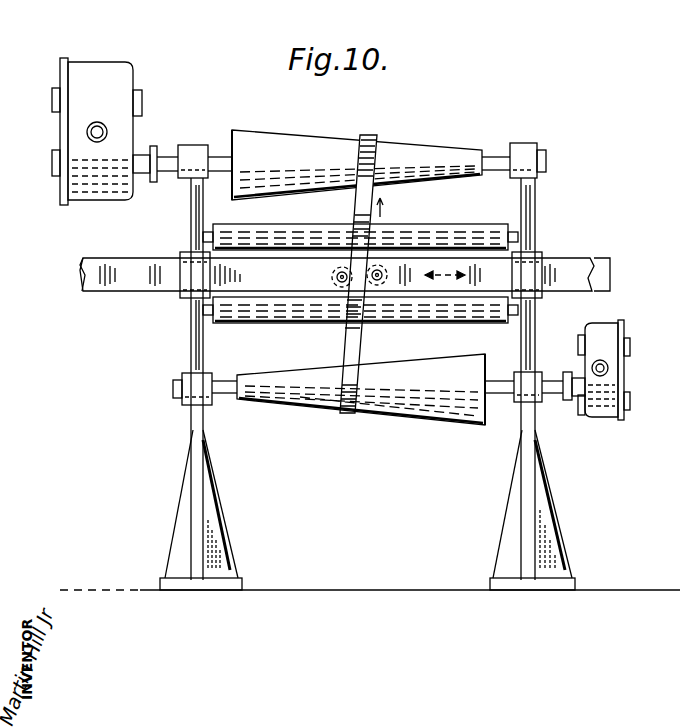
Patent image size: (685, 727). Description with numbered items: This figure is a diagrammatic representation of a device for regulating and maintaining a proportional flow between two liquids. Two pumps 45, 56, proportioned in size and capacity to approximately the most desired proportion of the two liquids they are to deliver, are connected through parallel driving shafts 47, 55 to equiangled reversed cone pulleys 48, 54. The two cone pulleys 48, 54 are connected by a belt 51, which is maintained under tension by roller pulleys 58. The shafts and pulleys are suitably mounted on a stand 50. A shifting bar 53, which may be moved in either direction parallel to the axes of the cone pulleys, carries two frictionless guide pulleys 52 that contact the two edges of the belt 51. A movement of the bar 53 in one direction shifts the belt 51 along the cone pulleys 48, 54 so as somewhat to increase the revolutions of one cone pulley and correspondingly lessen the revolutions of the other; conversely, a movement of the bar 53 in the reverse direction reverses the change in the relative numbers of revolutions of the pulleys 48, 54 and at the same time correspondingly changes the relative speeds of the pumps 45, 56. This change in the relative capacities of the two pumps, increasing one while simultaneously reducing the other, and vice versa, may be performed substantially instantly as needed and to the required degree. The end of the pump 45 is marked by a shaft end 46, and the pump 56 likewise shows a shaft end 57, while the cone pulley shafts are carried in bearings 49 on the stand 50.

The pump 45 is at (116, 96).
The motor shaft end 46 is at (87, 132).
The driving shaft 47 is at (161, 157).
The cone pulley 48 is at (304, 142).
The bearing 49 is at (193, 146).
The stand 50 is at (200, 496).
The belt 51 is at (370, 140).
The guide pulleys 52 is at (348, 268).
The shifting bar 53 is at (112, 264).
The cone pulley 54 is at (410, 410).
The driving shaft 55 is at (503, 403).
The pump 56 is at (600, 327).
The motor shaft end 57 is at (609, 367).
The roller pulleys 58 is at (455, 236).